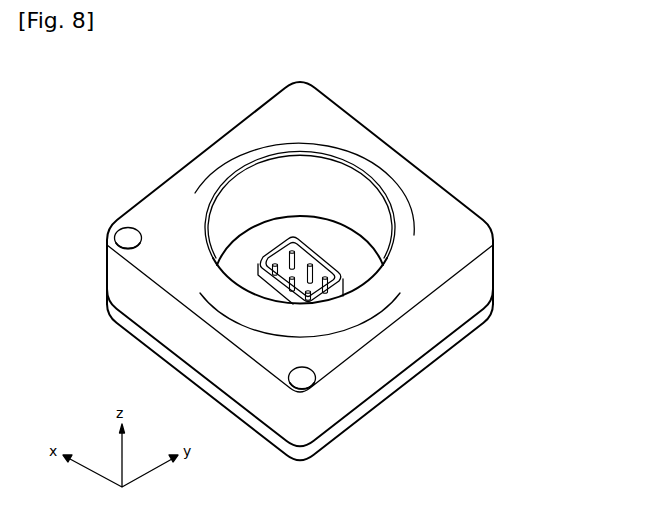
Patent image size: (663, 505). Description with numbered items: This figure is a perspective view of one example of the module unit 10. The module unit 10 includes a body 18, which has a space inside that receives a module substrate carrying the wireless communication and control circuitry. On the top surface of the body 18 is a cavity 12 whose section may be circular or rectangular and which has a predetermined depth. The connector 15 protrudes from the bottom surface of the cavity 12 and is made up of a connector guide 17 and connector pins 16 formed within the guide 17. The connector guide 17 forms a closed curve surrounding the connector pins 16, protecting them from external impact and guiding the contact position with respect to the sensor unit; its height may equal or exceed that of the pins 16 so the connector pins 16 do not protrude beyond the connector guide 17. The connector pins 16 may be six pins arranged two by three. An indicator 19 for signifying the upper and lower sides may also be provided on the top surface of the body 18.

The module unit 10 is at (408, 114).
The cavity 12 is at (291, 197).
The connector 15 is at (317, 252).
The connector pins 16 is at (300, 260).
The connector guide 17 is at (300, 260).
The body 18 is at (207, 213).
The indicator 19 is at (118, 232).